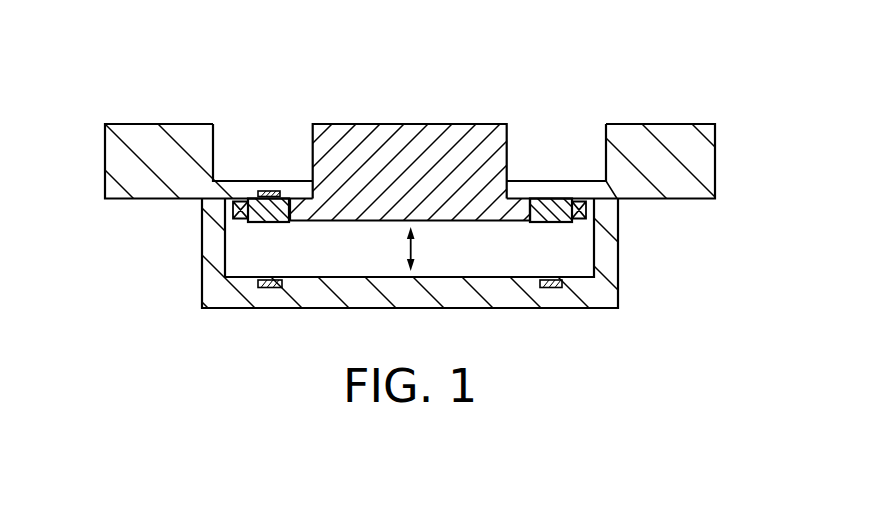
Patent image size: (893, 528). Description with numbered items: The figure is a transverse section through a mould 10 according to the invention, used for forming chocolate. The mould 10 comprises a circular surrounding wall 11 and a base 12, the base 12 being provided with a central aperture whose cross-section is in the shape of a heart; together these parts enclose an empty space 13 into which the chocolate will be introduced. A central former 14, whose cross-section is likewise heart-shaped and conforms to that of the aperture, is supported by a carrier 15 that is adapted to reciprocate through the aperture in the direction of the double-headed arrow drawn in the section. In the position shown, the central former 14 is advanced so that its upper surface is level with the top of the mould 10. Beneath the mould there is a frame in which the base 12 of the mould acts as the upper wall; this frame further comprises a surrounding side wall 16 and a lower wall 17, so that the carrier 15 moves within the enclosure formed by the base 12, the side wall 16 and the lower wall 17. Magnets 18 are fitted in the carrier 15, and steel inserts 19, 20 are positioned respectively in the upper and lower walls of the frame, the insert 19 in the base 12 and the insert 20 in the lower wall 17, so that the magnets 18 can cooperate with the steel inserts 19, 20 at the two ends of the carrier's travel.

The mould 10 is at (642, 92).
The circular surrounding wall 11 is at (118, 152).
The base 12 is at (226, 179).
The empty space 13 is at (294, 131).
The central former 14 is at (410, 130).
The carrier 15 is at (310, 226).
The surrounding side wall 16 is at (612, 252).
The lower wall 17 is at (410, 295).
The magnets 18 is at (272, 226).
The steel insert 19 is at (266, 188).
The steel insert 20 is at (272, 290).